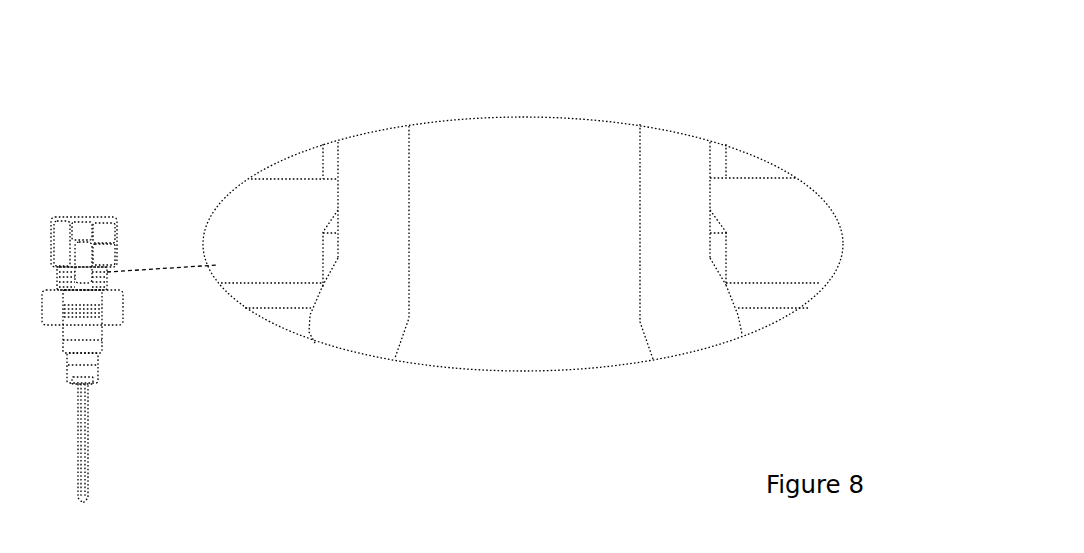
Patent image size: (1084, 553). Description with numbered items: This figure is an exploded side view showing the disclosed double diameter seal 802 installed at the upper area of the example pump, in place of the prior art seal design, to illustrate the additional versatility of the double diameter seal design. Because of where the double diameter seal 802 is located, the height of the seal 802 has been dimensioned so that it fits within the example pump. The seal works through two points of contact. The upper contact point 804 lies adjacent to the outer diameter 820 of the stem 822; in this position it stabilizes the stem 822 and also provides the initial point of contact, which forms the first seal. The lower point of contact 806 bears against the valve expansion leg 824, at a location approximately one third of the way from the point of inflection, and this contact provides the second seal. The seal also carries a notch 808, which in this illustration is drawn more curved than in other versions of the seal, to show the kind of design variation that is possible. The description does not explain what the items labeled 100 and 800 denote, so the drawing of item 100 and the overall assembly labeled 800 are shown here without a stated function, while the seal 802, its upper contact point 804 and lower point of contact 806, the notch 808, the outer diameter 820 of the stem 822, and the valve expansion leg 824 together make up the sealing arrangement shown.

The analyte sensor 100 is at (125, 336).
The sensor applicator 800 is at (718, 78).
The double diameter seal 802 is at (785, 187).
The upper contact point 804 is at (713, 175).
The lower point of contact 806 is at (732, 286).
The notch 808 is at (731, 233).
The outer diameter 820 is at (696, 149).
The stem 822 is at (720, 335).
The valve expansion leg 824 is at (305, 295).